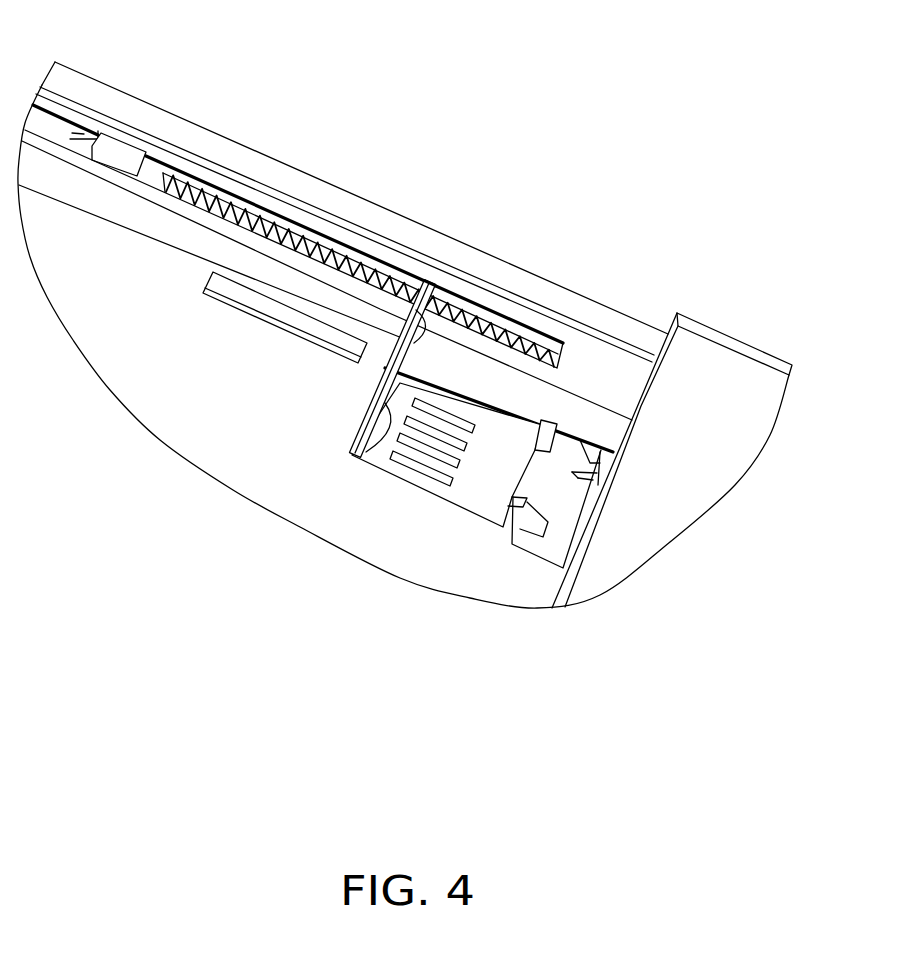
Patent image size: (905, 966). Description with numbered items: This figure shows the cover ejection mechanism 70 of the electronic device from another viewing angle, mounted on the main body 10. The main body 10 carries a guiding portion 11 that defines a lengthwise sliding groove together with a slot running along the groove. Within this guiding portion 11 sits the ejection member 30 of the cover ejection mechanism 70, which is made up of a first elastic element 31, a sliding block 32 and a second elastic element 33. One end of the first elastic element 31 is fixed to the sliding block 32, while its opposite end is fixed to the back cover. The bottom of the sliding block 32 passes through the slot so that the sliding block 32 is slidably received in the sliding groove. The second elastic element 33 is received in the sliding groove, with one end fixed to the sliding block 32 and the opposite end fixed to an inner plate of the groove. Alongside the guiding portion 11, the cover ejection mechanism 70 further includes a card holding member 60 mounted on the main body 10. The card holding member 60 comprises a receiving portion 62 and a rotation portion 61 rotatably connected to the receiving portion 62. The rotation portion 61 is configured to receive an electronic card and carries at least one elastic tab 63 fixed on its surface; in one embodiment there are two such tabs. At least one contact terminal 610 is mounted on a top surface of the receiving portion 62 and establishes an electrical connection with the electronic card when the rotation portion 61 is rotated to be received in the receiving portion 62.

The main body 10 is at (718, 428).
The guiding portion 11 is at (605, 360).
The ejection member 30 is at (294, 192).
The first elastic element 31 is at (52, 127).
The sliding block 32 is at (122, 155).
The second elastic element 33 is at (294, 231).
The card holding member 60 is at (425, 486).
The rotation portion 61 is at (352, 457).
The receiving portion 62 is at (490, 503).
The elastic tab 63 is at (359, 467).
The contact terminal 610 is at (427, 472).
The cover ejection mechanism 70 is at (452, 258).